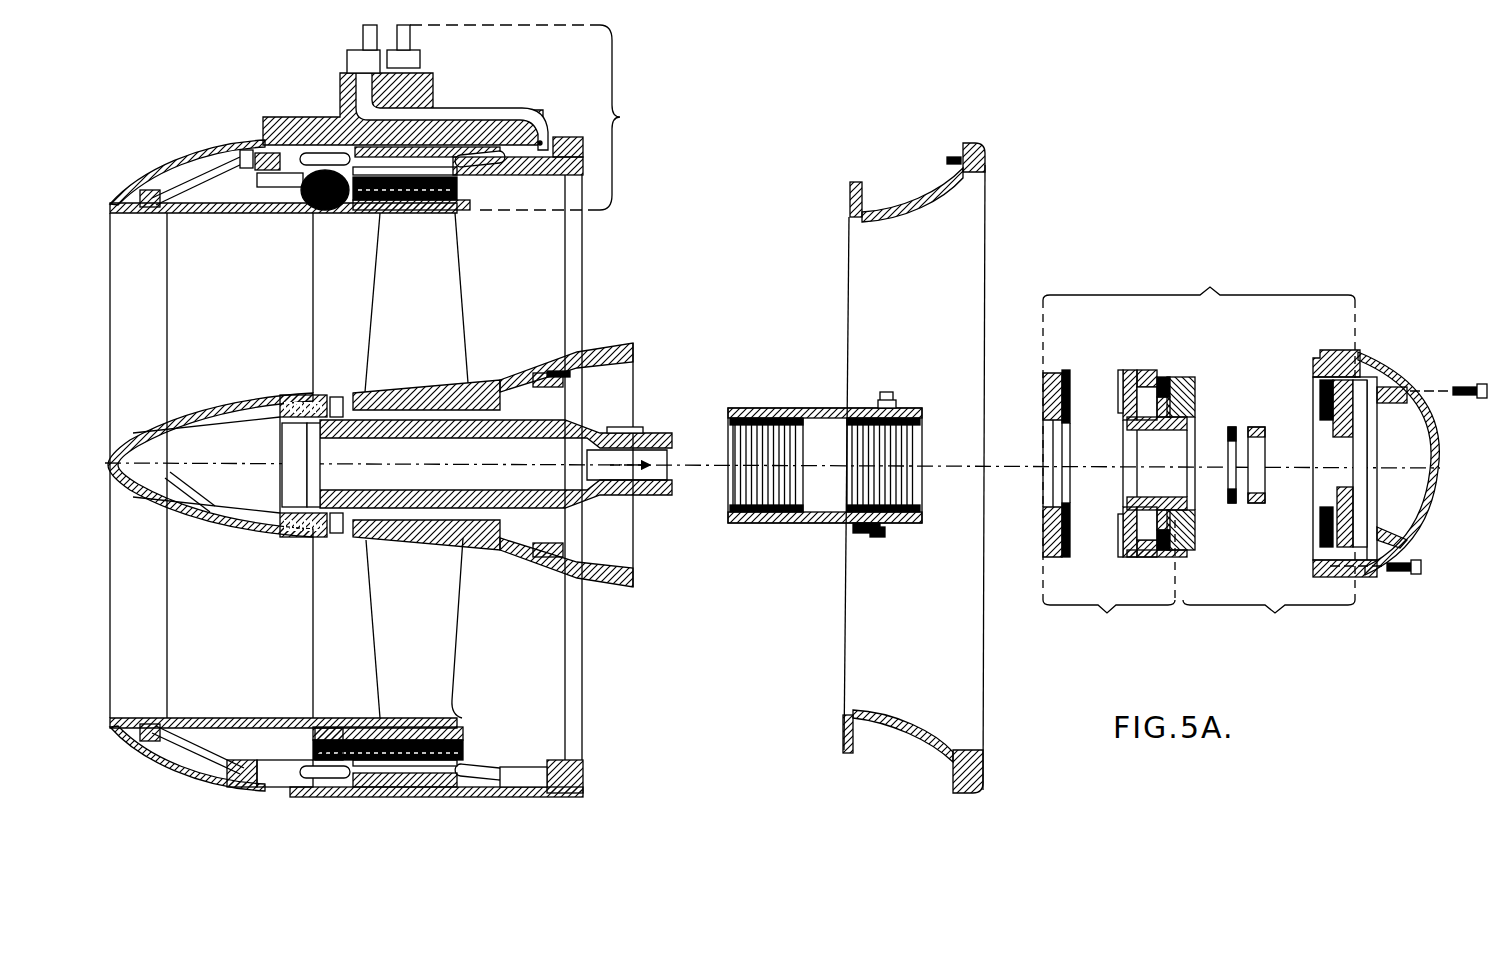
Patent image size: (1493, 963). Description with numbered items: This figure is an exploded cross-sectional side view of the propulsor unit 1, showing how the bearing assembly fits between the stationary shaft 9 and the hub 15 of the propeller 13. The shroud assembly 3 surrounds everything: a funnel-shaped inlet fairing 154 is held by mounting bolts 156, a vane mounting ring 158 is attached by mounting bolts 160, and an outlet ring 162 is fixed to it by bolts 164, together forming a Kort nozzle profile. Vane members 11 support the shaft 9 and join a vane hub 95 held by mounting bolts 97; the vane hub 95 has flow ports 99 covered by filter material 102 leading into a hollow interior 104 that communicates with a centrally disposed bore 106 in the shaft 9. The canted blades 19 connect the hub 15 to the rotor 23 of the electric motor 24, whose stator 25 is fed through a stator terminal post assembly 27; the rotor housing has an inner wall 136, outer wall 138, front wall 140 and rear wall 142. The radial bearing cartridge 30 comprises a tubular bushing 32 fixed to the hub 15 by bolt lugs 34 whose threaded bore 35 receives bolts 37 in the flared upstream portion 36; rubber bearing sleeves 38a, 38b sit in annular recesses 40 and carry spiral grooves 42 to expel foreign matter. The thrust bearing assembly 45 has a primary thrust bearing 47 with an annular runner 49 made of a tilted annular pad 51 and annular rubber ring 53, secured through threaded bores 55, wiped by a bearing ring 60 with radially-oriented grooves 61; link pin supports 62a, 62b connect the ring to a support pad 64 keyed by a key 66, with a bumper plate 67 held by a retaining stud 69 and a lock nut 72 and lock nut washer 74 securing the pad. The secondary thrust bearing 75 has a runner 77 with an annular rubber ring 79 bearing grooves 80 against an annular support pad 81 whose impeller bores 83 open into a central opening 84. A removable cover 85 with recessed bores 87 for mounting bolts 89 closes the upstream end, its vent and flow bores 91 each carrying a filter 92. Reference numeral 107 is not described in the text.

The propulsor unit 1 is at (265, 108).
The shroud assembly 3 is at (200, 160).
The stationary shaft 9 is at (418, 440).
The vane members 11 is at (256, 296).
The propeller 13 is at (466, 330).
The hub 15 is at (500, 548).
The canted blades 19 is at (433, 346).
The rotor 23 is at (468, 186).
The electric motor 24 is at (528, 117).
The stator 25 is at (465, 113).
The stator terminal post assembly 27 is at (423, 52).
The radial bearing cartridge 30 is at (780, 405).
The tubular bushing 32 is at (815, 408).
The bolt lugs 34 is at (887, 392).
The threaded bore 35 is at (896, 404).
The flared upstream portion 36 is at (605, 342).
The bolts 37 is at (540, 365).
The rubber bearing sleeve 38a is at (733, 505).
The rubber bearing sleeve 38b is at (905, 515).
The annular recesses 40 is at (805, 523).
The spiral grooves 42 is at (745, 450).
The thrust bearing assembly 45 is at (1199, 432).
The primary thrust bearing 47 is at (1109, 582).
The annular runner 49 is at (1065, 369).
The tilted annular pad 51 is at (1043, 557).
The annular rubber ring 53 is at (1066, 557).
The threaded bores 55 is at (1045, 380).
The bearing ring 60 is at (1137, 370).
The radially-oriented grooves 61 is at (1118, 385).
The link pin support 62a is at (1155, 378).
The link pin support 62b is at (1140, 557).
The support pad 64 is at (1178, 405).
The key 66 is at (625, 427).
The bumper plate 67 is at (1185, 555).
The retaining stud 69 is at (1195, 525).
The lock nut 72 is at (1258, 427).
The lock nut washer 74 is at (1232, 505).
The secondary thrust bearing 75 is at (1269, 622).
The runner 77 is at (1340, 375).
The annular rubber ring 79 is at (1325, 385).
The grooves 80 is at (1325, 530).
The annular support pad 81 is at (1345, 415).
The impeller bores 83 is at (1350, 495).
The central opening 84 is at (1357, 440).
The removable cover 85 is at (1440, 470).
The recessed bores 87 is at (1405, 388).
The mounting bolts 89 is at (1470, 397).
The vent and flow bores 91 is at (1415, 540).
The filter 92 is at (1400, 530).
The vane hub 95 is at (160, 420).
The mounting bolts 97 is at (303, 395).
The flow ports 99 is at (195, 515).
The filter material 102 is at (195, 408).
The hollow interior 104 is at (200, 459).
The centrally disposed bore 106 is at (478, 458).
The lock nut 107 is at (335, 537).
The inner wall 136 is at (398, 212).
The outer wall 138 is at (455, 215).
The front wall 140 is at (467, 205).
The rear wall 142 is at (328, 212).
The inlet fairing 154 is at (940, 283).
The mounting bolts 156 is at (950, 157).
The vane mounting ring 158 is at (260, 215).
The mounting bolts 160 is at (246, 150).
The outlet ring 162 is at (165, 332).
The bolts 164 is at (150, 194).